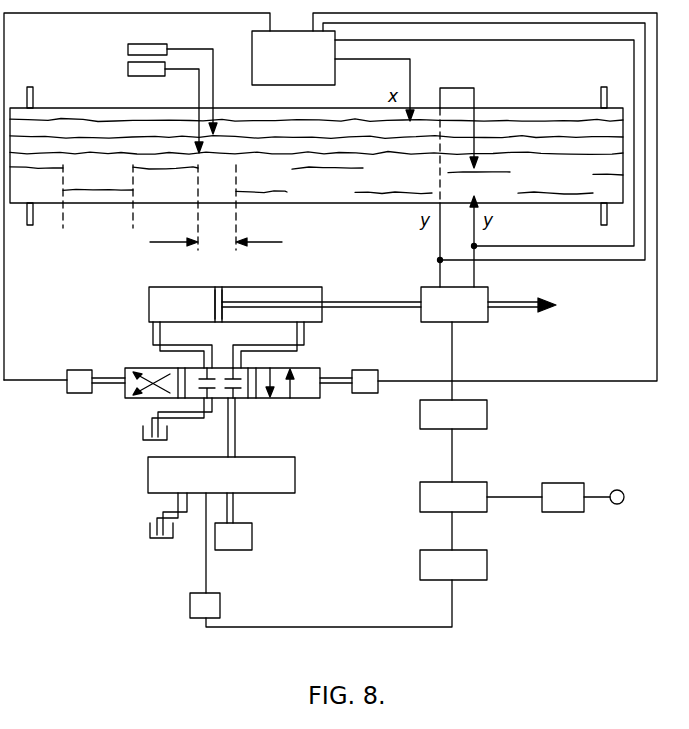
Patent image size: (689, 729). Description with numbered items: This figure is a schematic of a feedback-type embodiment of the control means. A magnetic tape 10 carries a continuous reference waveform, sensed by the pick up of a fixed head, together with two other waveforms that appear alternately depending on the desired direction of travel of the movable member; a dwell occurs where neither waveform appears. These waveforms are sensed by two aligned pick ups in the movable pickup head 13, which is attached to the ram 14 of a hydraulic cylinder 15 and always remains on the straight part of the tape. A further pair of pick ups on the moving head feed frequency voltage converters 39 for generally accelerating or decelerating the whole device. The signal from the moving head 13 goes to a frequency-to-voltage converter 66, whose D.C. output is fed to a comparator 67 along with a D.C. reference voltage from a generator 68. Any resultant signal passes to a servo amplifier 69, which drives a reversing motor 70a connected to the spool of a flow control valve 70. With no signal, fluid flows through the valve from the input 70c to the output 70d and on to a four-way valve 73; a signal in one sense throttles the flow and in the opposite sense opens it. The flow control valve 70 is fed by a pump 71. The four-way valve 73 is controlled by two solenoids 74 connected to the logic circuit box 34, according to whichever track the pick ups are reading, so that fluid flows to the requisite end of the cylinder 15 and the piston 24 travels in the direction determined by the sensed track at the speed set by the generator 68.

The magnetic tape 10 is at (533, 100).
The movable pickup head 13 is at (496, 304).
The ram 14 is at (382, 300).
The hydraulic cylinder 15 is at (165, 287).
The piston 24 is at (215, 303).
The logic circuit box 34 is at (302, 69).
The frequency voltage converters 39 is at (128, 69).
The frequency-to-voltage converter 66 is at (453, 414).
The comparator 67 is at (481, 497).
The generator 68 is at (583, 497).
The servo amplifier 69 is at (453, 565).
The flow control valve 70 is at (230, 489).
The reversing motor 70a is at (220, 610).
The input 70c is at (235, 511).
The output 70d is at (237, 431).
The pump 71 is at (238, 540).
The four-way valve 73 is at (131, 356).
The solenoids 74 is at (79, 393).